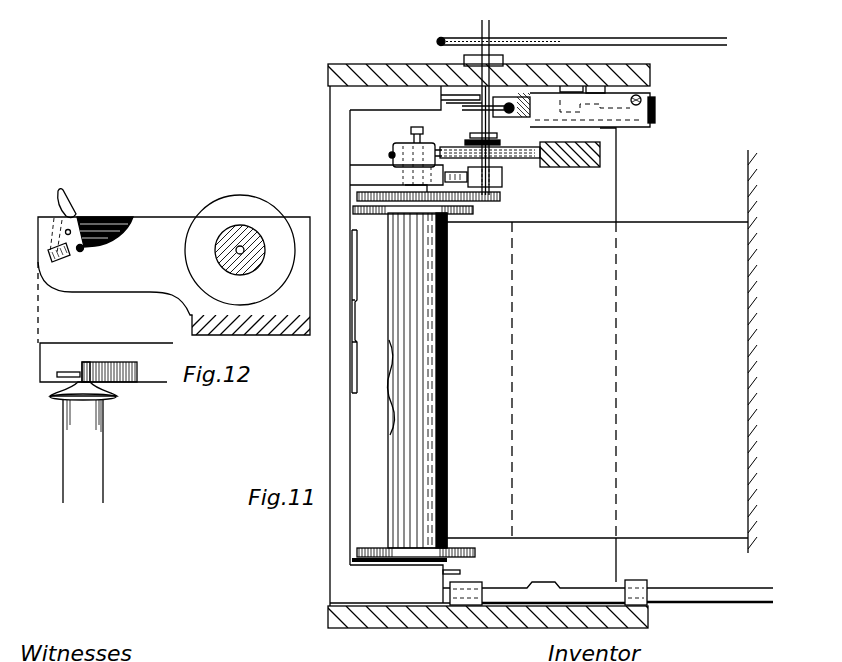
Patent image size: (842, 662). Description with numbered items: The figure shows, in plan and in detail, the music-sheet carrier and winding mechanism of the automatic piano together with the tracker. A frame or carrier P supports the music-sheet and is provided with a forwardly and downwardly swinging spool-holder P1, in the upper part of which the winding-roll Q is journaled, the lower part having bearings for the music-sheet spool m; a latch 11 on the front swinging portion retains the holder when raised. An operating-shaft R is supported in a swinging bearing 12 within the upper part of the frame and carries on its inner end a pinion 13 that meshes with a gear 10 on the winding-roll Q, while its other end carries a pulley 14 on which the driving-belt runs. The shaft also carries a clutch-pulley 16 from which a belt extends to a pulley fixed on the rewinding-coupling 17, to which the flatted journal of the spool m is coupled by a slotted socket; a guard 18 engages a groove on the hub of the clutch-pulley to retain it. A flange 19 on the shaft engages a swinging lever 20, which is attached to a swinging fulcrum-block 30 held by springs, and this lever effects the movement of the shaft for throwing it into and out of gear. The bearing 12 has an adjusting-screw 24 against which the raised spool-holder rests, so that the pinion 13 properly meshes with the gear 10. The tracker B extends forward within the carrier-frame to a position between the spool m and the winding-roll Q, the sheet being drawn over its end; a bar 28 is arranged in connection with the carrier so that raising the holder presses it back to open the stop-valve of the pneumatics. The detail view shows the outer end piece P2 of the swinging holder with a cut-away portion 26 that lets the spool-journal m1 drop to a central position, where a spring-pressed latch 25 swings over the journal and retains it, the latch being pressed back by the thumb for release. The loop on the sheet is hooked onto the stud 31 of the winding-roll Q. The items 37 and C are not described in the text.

In FIG. 11, the frame or carrier P is at (648, 80).
In FIG. 11, the swinging spool-holder P1 is at (330, 150).
In FIG. 11, the outer end piece P2 is at (400, 584).
In FIG. 12, the outer end piece P2 is at (181, 299).
In FIG. 11, the operating-shaft R is at (483, 100).
In FIG. 11, the rod 37 is at (672, 40).
In FIG. 11, the pulley 14 is at (447, 30).
In FIG. 11, the swinging lever 20 is at (507, 101).
In FIG. 11, the flange 19 is at (461, 112).
In FIG. 11, the swinging fulcrum-block 30 is at (638, 125).
In FIG. 11, the clutch-pulley 16 is at (487, 144).
In FIG. 11, the guard 18 is at (565, 147).
In FIG. 11, the rewinding-coupling 17 is at (382, 150).
In FIG. 11, the adjusting-screw 24 is at (456, 171).
In FIG. 11, the swinging bearing 12 is at (497, 180).
In FIG. 11, the gear 10 is at (357, 195).
In FIG. 11, the pinion 13 is at (430, 380).
In FIG. 11, the winding-roll Q is at (417, 318).
In FIG. 12, the winding-roll Q is at (239, 250).
In FIG. 11, the latch 11 is at (350, 363).
In FIG. 11, the stud 31 is at (383, 387).
In FIG. 11, the tracker B is at (597, 380).
In FIG. 11, the wall C is at (757, 351).
In FIG. 11, the spring-pressed latch 25 is at (545, 584).
In FIG. 12, the spring-pressed latch 25 is at (60, 200).
In FIG. 11, the bar 28 is at (627, 592).
In FIG. 12, the cut-away portion 26 is at (105, 217).
In FIG. 12, the spool-journal m1 is at (84, 251).
In FIG. 12, the music-sheet spool m is at (83, 442).